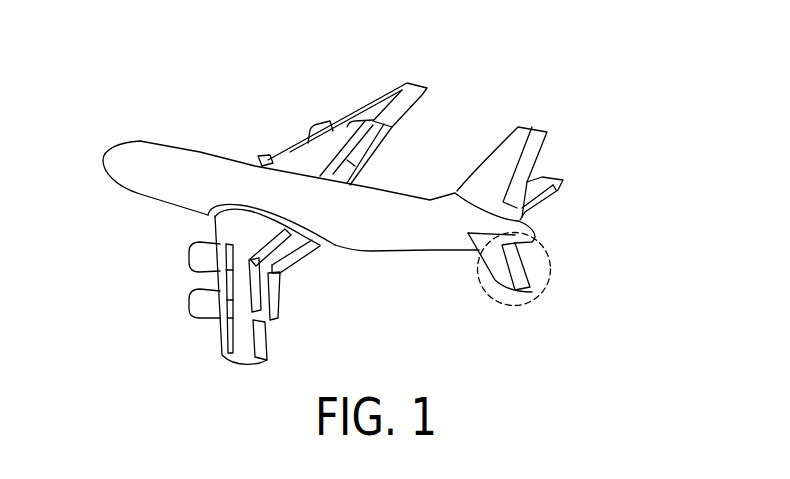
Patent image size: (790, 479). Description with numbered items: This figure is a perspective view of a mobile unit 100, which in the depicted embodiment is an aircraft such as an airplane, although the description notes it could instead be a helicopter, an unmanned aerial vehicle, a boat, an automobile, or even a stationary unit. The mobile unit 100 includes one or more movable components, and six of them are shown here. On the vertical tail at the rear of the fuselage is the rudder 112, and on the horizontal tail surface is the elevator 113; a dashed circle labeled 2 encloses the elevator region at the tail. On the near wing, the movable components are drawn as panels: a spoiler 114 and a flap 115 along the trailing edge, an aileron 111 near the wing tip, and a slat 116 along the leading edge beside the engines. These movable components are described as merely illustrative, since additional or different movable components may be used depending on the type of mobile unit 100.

The mobile unit 100 is at (88, 110).
The rudder 112 is at (536, 151).
The elevator 113 is at (512, 272).
The detail area (FIG. 2) 2 is at (551, 275).
The spoiler 114 is at (273, 272).
The flap 115 is at (272, 295).
The aileron 111 is at (260, 343).
The slat 116 is at (226, 337).